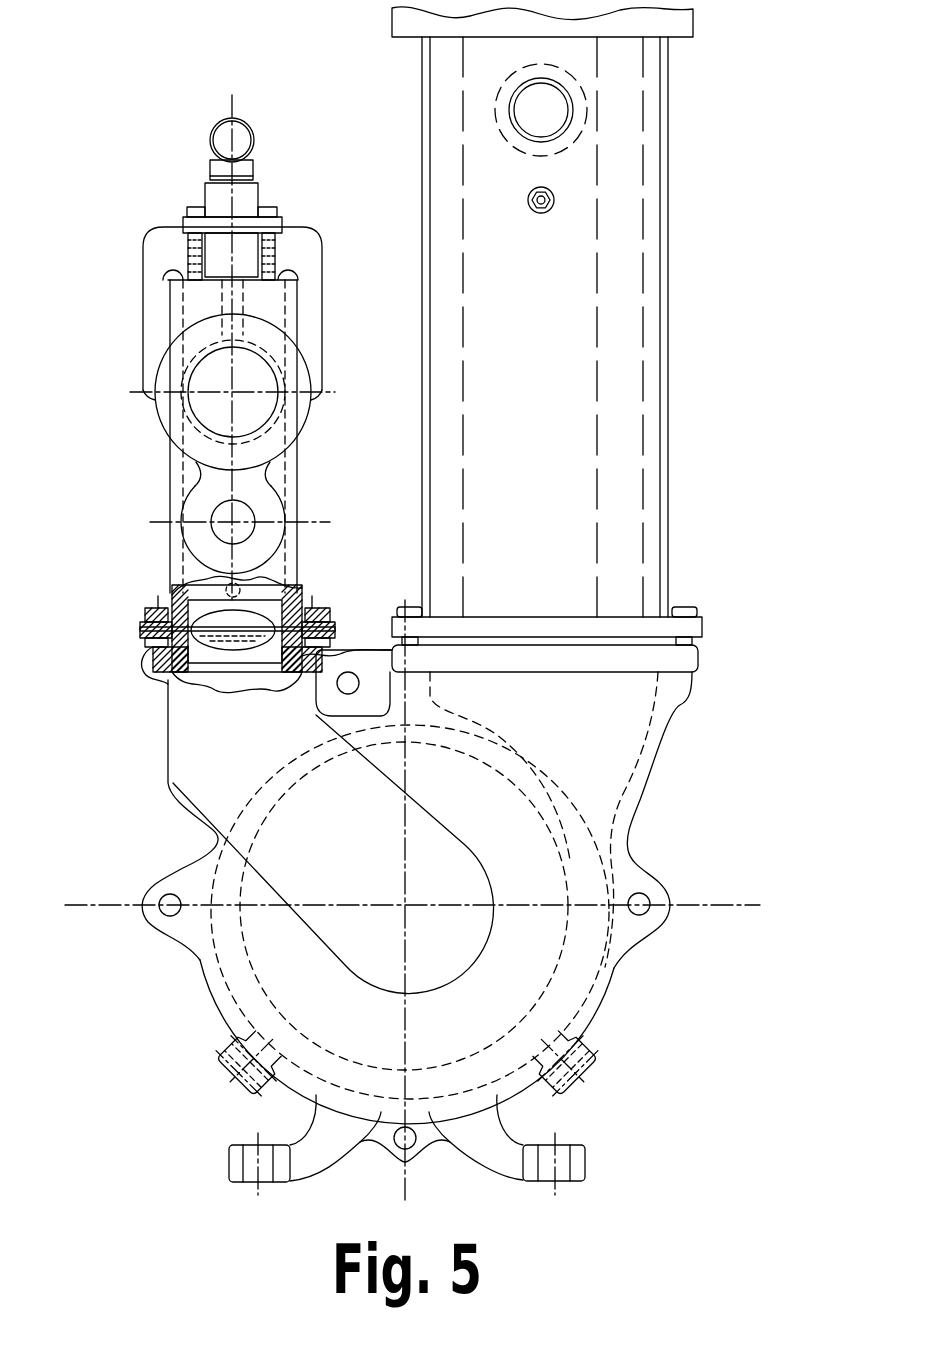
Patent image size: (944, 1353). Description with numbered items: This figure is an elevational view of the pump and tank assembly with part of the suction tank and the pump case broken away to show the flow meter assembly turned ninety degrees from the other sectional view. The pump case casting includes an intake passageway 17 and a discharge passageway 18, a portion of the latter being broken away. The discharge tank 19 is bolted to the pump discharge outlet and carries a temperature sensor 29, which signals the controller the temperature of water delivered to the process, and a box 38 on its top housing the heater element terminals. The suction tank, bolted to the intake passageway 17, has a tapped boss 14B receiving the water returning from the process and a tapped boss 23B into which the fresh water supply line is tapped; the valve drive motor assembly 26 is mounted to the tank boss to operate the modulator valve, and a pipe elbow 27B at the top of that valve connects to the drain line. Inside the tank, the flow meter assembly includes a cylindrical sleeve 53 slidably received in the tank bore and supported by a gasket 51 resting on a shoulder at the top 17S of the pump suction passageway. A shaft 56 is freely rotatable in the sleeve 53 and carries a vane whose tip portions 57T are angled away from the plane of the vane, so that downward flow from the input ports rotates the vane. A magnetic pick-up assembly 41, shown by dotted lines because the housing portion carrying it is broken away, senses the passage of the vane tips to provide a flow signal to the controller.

The box 38 is at (681, 27).
The discharge tank 19 is at (668, 404).
The temperature sensor 29 is at (556, 203).
The discharge passageway 18 is at (623, 737).
The intake passageway 17 is at (190, 777).
The motor assembly 26 is at (332, 217).
The pipe elbow 27B is at (255, 142).
The tapped boss 14B is at (297, 366).
The tapped boss 23B is at (260, 519).
The shaft 56 is at (315, 598).
The cylindrical sleeve 53 is at (330, 628).
The tip portions 57T is at (140, 645).
The magnetic pick-up assembly 41 is at (243, 592).
The gasket 51 is at (222, 668).
The top of the pump suction passageway 17S is at (195, 680).